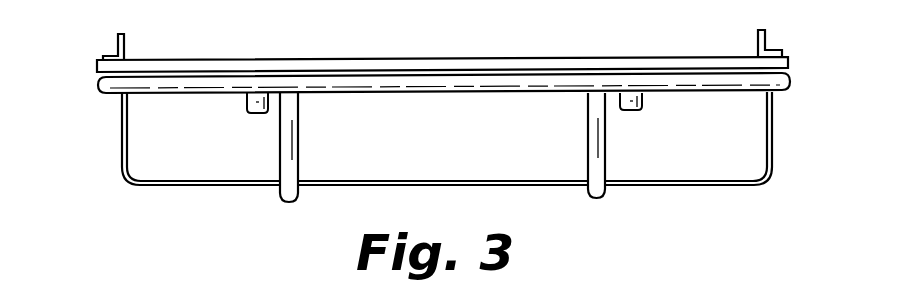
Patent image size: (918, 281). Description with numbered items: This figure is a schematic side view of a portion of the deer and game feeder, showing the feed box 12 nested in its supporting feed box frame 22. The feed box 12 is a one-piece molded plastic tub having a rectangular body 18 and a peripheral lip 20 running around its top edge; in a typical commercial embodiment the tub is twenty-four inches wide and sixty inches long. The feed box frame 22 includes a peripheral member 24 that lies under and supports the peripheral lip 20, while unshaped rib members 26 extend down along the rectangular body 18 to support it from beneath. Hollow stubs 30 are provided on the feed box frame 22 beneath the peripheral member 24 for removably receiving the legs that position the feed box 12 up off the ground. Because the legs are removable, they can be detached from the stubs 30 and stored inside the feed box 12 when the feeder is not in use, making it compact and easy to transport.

The feed box 12 is at (146, 188).
The rectangular body 18 is at (545, 188).
The peripheral lip 20 is at (633, 57).
The feed box frame 22 is at (714, 275).
The peripheral member 24 is at (790, 77).
The unshaped rib members 26 is at (290, 203).
The hollow stubs 30 is at (630, 112).